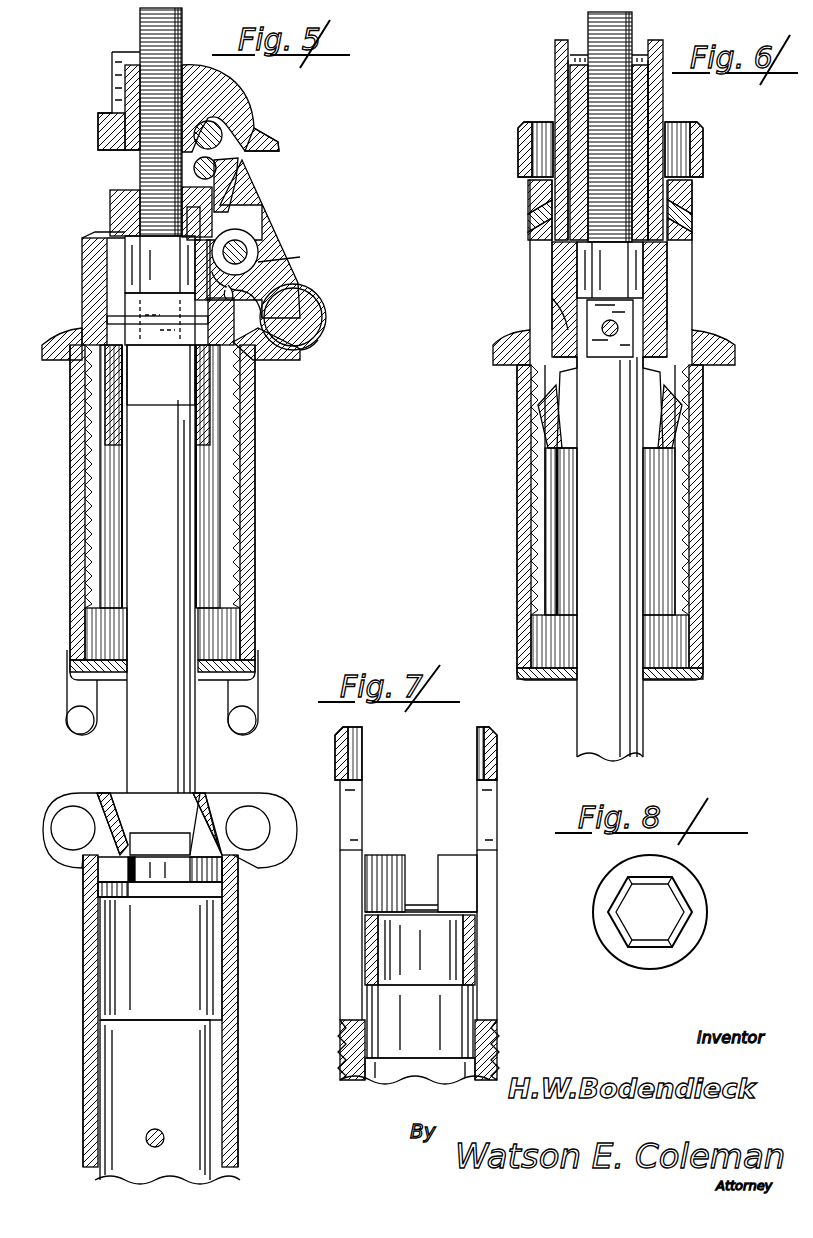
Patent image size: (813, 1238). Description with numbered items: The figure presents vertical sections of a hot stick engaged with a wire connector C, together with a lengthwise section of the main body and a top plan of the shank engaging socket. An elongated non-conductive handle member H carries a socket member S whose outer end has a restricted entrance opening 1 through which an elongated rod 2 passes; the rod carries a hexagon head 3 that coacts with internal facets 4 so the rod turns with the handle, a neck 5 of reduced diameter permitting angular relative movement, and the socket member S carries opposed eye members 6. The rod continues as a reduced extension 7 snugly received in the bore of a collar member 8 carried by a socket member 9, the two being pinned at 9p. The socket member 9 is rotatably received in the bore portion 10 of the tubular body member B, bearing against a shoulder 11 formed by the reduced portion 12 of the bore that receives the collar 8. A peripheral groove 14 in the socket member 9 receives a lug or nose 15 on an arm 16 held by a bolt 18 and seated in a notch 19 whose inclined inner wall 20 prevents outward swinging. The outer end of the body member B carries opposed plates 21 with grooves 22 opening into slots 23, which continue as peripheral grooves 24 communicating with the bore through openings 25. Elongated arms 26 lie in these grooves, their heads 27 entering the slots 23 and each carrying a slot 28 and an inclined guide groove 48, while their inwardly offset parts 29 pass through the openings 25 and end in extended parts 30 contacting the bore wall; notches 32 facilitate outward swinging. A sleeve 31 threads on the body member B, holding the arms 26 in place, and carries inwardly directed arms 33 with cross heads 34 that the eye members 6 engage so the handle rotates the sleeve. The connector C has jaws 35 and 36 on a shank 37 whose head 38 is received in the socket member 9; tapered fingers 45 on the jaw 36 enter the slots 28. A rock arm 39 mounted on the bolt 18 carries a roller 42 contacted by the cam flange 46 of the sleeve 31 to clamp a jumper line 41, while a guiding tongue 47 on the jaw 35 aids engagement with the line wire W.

In FIG. 5, the restricted entrance opening 1 is at (200, 798).
In FIG. 5, the elongated rod 2 is at (145, 748).
In FIG. 6, the elongated rod 2 is at (625, 718).
In FIG. 5, the enlarged head 3 is at (205, 873).
In FIG. 5, the internal facets 4 is at (100, 890).
In FIG. 5, the neck 5 is at (150, 838).
In FIG. 5, the eye members 6 is at (275, 812).
In FIG. 5, the reduced extension 7 is at (158, 352).
In FIG. 6, the reduced extension 7 is at (615, 312).
In FIG. 5, the reduced collar member 8 is at (205, 342).
In FIG. 6, the reduced collar member 8 is at (660, 345).
In FIG. 5, the socket member 9 is at (245, 248).
In FIG. 6, the socket member 9 is at (655, 272).
In FIG. 8, the socket member 9 is at (696, 904).
In FIG. 5, the pin 9p is at (120, 320).
In FIG. 6, the pin 9p is at (618, 328).
In FIG. 5, the bore portion 10 is at (110, 235).
In FIG. 7, the bore portion 10 is at (470, 890).
In FIG. 5, the shoulder 11 is at (118, 312).
In FIG. 6, the shoulder 11 is at (555, 318).
In FIG. 7, the shoulder 11 is at (462, 897).
In FIG. 5, the reduced portion of the bore 12 is at (110, 362).
In FIG. 6, the reduced portion of the bore 12 is at (598, 372).
In FIG. 7, the reduced portion of the bore 12 is at (465, 950).
In FIG. 5, the groove or channel 14 is at (105, 280).
In FIG. 6, the groove or channel 14 is at (670, 286).
In FIG. 5, the lug or nose 15 is at (270, 285).
In FIG. 5, the arm 16 is at (255, 292).
In FIG. 5, the holding bolt 18 is at (245, 256).
In FIG. 7, the open notch or recess 19 is at (438, 868).
In FIG. 5, the inner wall 20 is at (305, 348).
In FIG. 7, the inner wall 20 is at (412, 905).
In FIG. 6, the plates 21 is at (522, 132).
In FIG. 7, the plates 21 is at (497, 760).
In FIG. 6, the grooves 22 is at (540, 150).
In FIG. 7, the grooves 22 is at (478, 753).
In FIG. 7, the slots 23 is at (497, 806).
In FIG. 7, the grooves 24 is at (477, 960).
In FIG. 5, the openings 25 is at (105, 400).
In FIG. 7, the openings 25 is at (367, 1010).
In FIG. 6, the elongated arms 26 is at (535, 332).
In FIG. 6, the heads 27 is at (690, 192).
In FIG. 6, the slot 28 is at (690, 212).
In FIG. 6, the inwardly offset part 29 is at (560, 385).
In FIG. 6, the extended part 30 is at (665, 470).
In FIG. 5, the sleeve 31 is at (256, 508).
In FIG. 6, the sleeve 31 is at (705, 505).
In FIG. 6, the notches 32 is at (700, 392).
In FIG. 5, the inwardly directed arms 33 is at (275, 688).
In FIG. 5, the cross heads 34 is at (270, 724).
In FIG. 5, the jaw 35 is at (230, 85).
In FIG. 6, the jaw 35 is at (575, 92).
In FIG. 5, the jaw 36 is at (205, 208).
In FIG. 5, the shank 37 is at (150, 160).
In FIG. 6, the shank 37 is at (632, 35).
In FIG. 5, the head 38 is at (155, 258).
In FIG. 6, the head 38 is at (590, 262).
In FIG. 5, the rock arm 39 is at (255, 262).
In FIG. 5, the jumper line 41 is at (225, 160).
In FIG. 5, the roller 42 is at (326, 323).
In FIG. 6, the tapered lugs or fingers 45 is at (690, 230).
In FIG. 6, the cam bead or flange 46 is at (728, 357).
In FIG. 5, the guiding tongue 47 is at (278, 140).
In FIG. 6, the guide grooves 48 is at (700, 170).
In FIG. 5, the tubular body member B is at (236, 421).
In FIG. 7, the tubular body member B is at (332, 1081).
In FIG. 5, the wire connector C is at (105, 77).
In FIG. 6, the wire connector C is at (547, 64).
In FIG. 5, the handle member H is at (118, 1104).
In FIG. 5, the socket member S is at (84, 1018).
In FIG. 5, the line wire W is at (212, 130).